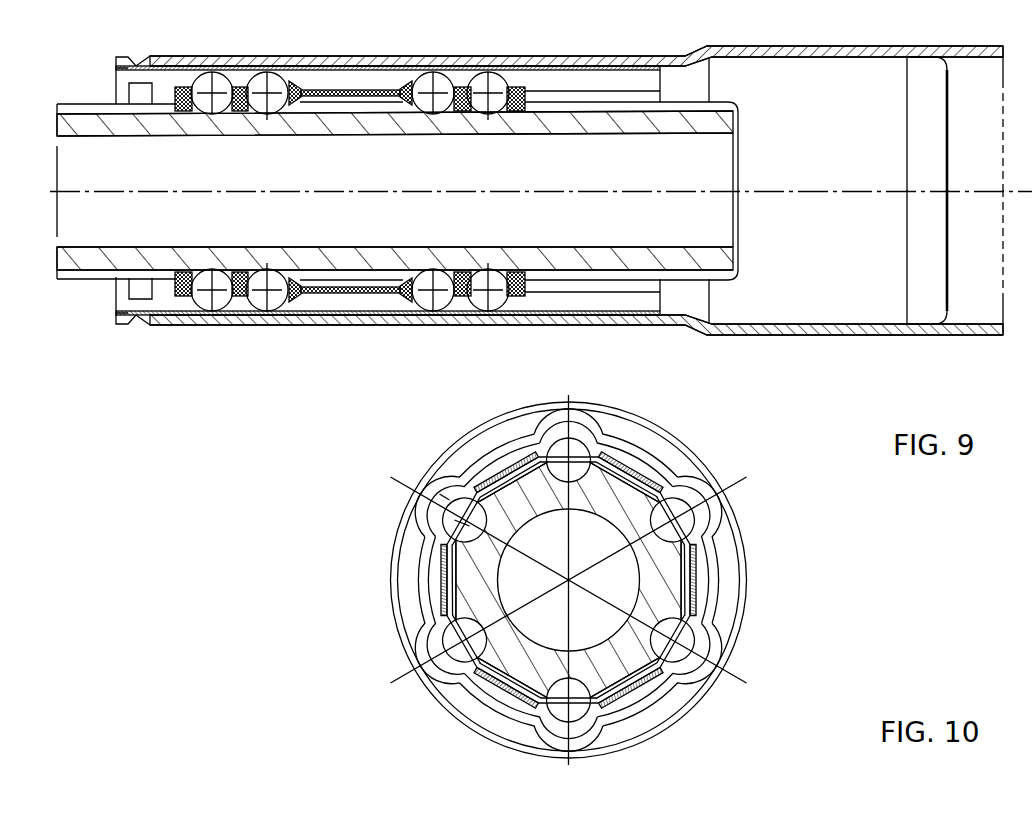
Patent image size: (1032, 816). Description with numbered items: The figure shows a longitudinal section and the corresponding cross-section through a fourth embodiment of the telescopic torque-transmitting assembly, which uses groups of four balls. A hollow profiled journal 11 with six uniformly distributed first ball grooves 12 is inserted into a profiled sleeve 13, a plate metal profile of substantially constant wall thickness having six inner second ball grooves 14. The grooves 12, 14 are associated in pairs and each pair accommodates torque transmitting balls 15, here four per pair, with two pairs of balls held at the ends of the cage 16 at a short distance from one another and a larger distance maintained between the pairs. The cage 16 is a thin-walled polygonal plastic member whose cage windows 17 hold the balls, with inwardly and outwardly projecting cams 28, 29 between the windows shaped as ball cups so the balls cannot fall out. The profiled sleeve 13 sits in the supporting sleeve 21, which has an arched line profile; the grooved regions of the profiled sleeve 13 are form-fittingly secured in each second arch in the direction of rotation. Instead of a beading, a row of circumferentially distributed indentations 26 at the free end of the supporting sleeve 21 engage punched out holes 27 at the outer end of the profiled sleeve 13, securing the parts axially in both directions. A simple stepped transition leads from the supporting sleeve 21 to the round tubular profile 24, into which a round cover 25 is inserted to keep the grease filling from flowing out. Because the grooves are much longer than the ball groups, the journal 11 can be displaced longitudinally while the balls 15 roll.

In FIG. 9, the profiled journal 11 is at (86, 262).
In FIG. 10, the profiled journal 11 is at (441, 608).
In FIG. 9, the first ball grooves 12 is at (104, 277).
In FIG. 10, the first ball grooves 12 is at (448, 620).
In FIG. 9, the profiled sleeve 13 is at (543, 312).
In FIG. 10, the profiled sleeve 13 is at (456, 697).
In FIG. 9, the second ball grooves 14 is at (567, 300).
In FIG. 10, the second ball grooves 14 is at (451, 664).
In FIG. 9, the torque transmitting balls 15 is at (279, 293).
In FIG. 10, the torque transmitting balls 15 is at (438, 547).
In FIG. 9, the cage 16 is at (326, 297).
In FIG. 10, the cage 16 is at (448, 575).
In FIG. 9, the cage windows 17 is at (267, 262).
In FIG. 9, the supporting sleeve 21 is at (634, 318).
In FIG. 10, the supporting sleeve 21 is at (712, 540).
In FIG. 9, the tubular profile 24 is at (786, 325).
In FIG. 10, the tubular profile 24 is at (737, 618).
In FIG. 9, the cover 25 is at (946, 322).
In FIG. 9, the indentations 26 is at (138, 312).
In FIG. 10, the indentations 26 is at (720, 574).
In FIG. 9, the punched out holes 27 is at (157, 300).
In FIG. 9, the inwardly projecting cams 28 is at (188, 296).
In FIG. 10, the inwardly projecting cams 28 is at (471, 526).
In FIG. 9, the outwardly projecting cams 29 is at (240, 292).
In FIG. 10, the outwardly projecting cams 29 is at (446, 497).